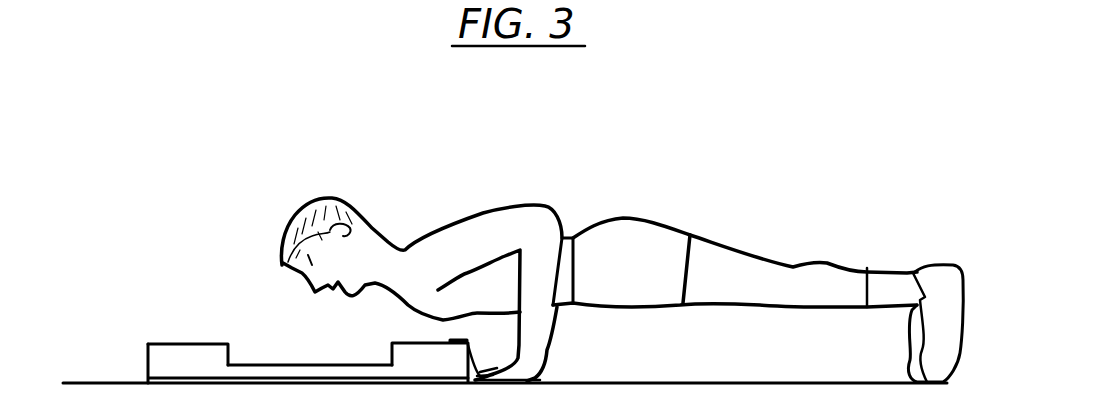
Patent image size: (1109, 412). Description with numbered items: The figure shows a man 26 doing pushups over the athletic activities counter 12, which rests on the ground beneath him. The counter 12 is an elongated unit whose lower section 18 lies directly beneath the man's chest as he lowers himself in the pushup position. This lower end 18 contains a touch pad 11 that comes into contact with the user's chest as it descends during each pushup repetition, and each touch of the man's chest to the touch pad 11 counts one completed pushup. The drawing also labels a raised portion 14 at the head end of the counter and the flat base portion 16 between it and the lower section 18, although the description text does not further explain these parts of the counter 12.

The touch pad 11 is at (468, 343).
The athletic activities counter 12 is at (286, 260).
The first raised end block 14 is at (178, 350).
The base platform 16 is at (277, 367).
The lower section 18 is at (413, 350).
The man 26 is at (715, 262).